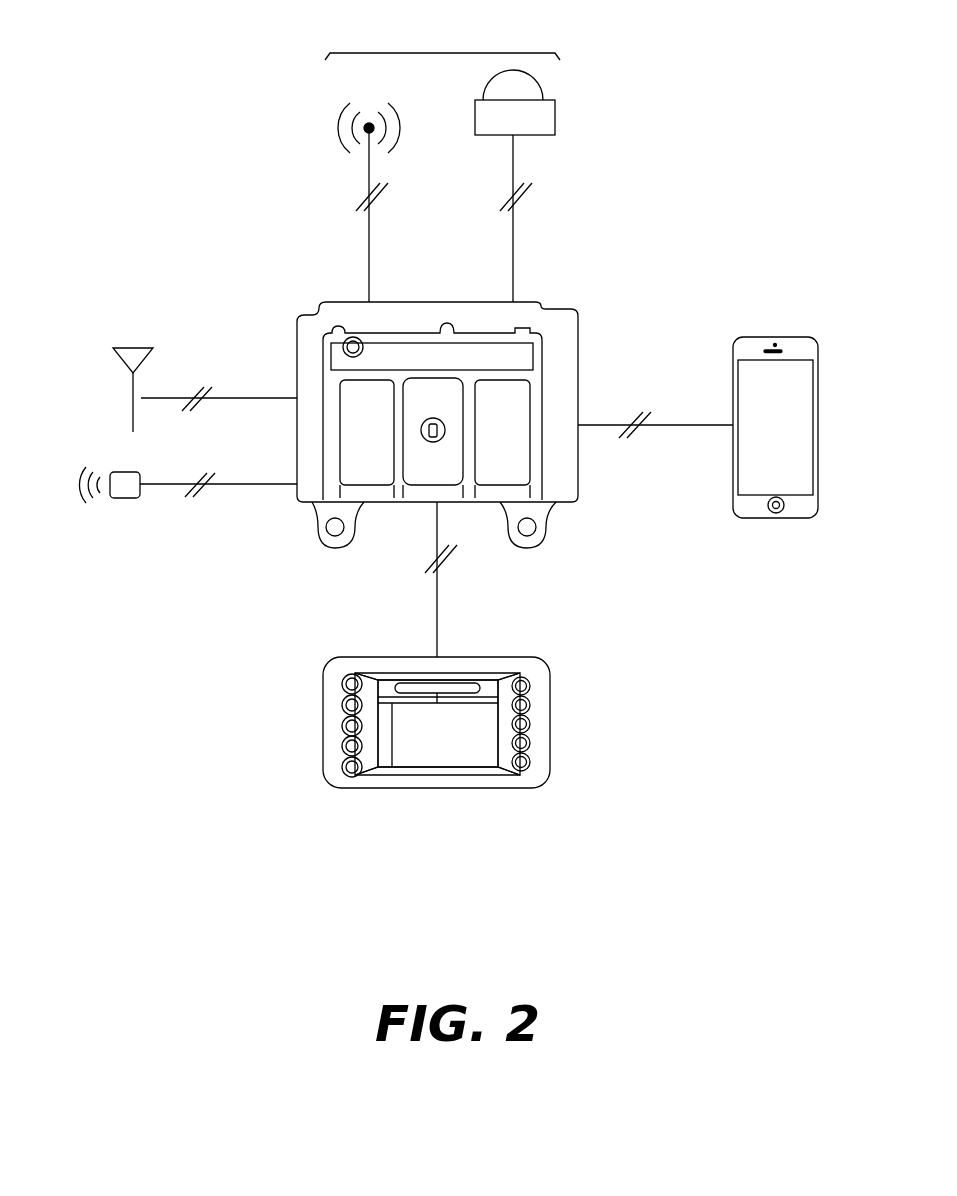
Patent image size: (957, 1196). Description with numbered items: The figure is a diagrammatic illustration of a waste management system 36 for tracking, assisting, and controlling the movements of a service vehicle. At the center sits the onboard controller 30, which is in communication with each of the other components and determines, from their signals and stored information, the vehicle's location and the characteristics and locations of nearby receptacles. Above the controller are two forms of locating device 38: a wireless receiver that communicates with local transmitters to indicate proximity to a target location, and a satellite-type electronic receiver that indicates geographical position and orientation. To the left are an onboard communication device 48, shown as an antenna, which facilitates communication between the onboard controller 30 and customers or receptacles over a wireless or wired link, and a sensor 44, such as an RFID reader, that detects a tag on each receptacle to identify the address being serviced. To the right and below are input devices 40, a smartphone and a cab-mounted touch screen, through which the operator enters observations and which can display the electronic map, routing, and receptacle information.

The onboard controller 30 is at (573, 306).
The waste management system 36 is at (679, 163).
The locating device 38 is at (451, 52).
The input device 40 is at (550, 690).
The sensor 44 is at (140, 494).
The communication device 48 is at (133, 398).